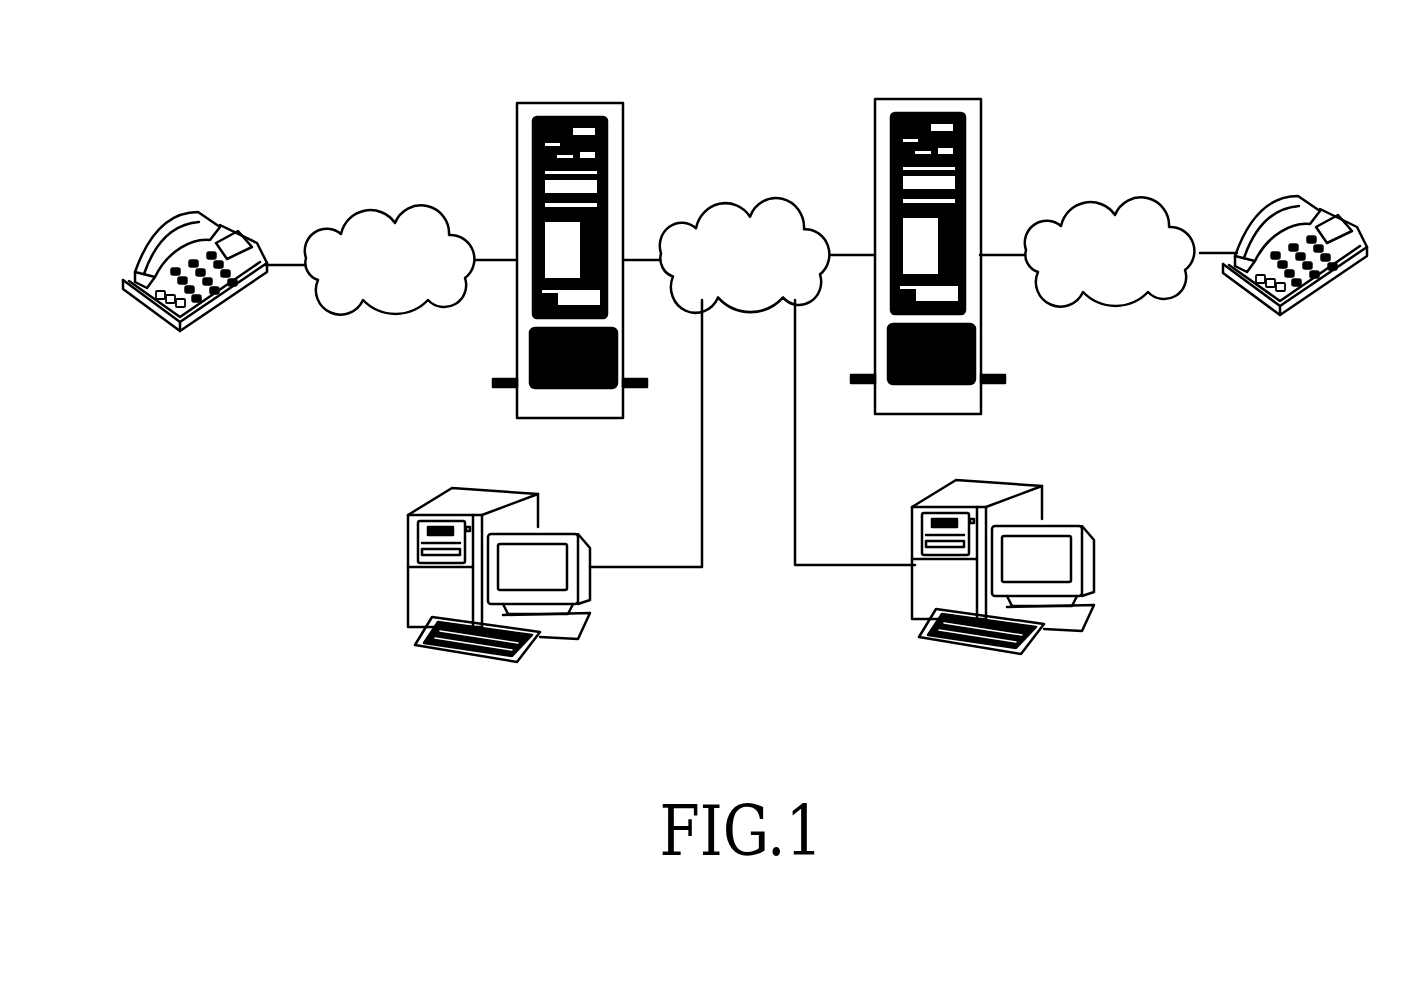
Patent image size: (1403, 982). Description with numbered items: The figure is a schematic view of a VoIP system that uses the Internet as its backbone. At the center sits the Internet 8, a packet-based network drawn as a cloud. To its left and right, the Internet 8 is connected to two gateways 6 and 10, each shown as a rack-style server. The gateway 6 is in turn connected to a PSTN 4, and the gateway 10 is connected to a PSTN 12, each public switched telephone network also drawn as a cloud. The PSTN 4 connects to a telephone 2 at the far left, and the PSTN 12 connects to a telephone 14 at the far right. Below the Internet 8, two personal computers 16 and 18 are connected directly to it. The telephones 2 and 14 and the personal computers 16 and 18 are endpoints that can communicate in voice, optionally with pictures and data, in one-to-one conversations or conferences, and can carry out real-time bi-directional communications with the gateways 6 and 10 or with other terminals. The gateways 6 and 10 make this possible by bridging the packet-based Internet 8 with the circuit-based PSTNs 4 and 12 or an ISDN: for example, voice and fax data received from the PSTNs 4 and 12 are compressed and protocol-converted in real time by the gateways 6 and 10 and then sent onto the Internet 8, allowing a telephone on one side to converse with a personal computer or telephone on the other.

The telephone 2 is at (213, 225).
The PSTN 4 is at (362, 208).
The gateway 6 is at (567, 103).
The Internet 8 is at (720, 205).
The gateway 10 is at (925, 98).
The PSTN 12 is at (1083, 202).
The telephone 14 is at (1315, 200).
The personal computer 16 is at (408, 585).
The personal computer 18 is at (1097, 558).